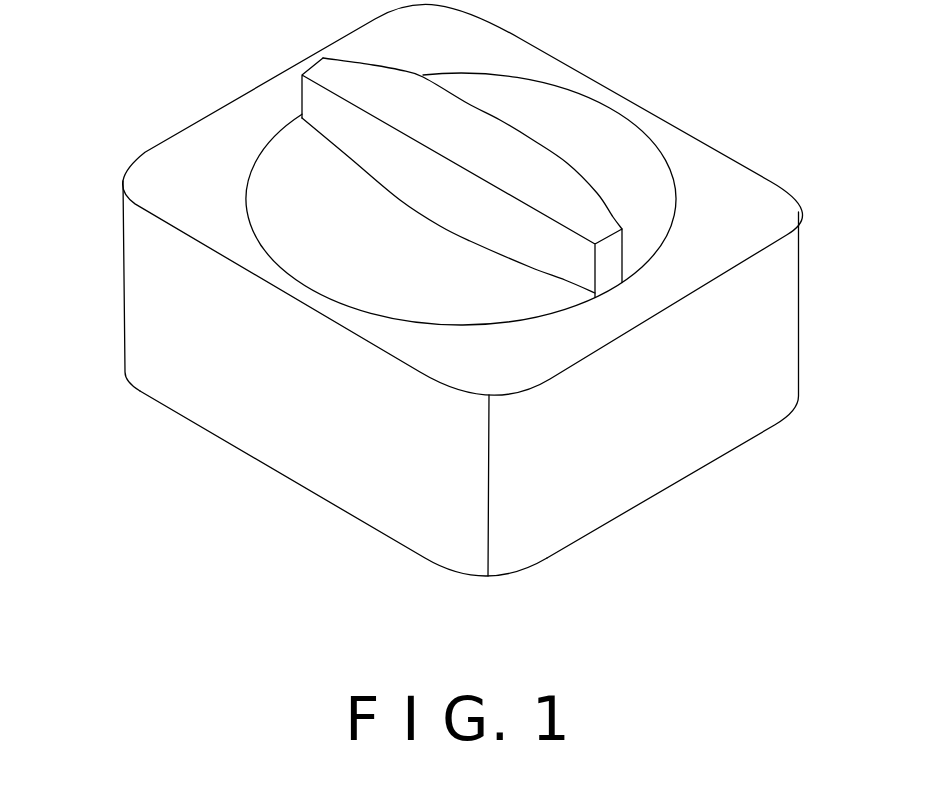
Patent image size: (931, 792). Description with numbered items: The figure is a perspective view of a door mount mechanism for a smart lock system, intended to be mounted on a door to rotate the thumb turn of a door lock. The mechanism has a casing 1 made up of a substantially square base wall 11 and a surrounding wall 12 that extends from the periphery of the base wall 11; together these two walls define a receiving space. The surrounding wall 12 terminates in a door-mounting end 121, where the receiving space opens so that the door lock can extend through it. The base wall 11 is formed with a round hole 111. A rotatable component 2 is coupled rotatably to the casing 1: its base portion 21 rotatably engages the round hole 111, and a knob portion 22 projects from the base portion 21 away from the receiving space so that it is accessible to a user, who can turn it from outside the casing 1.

The casing 1 is at (435, 315).
The base wall 11 is at (430, 315).
The round hole 111 is at (253, 167).
The surrounding wall 12 is at (335, 404).
The door-mounting end 121 is at (410, 522).
The rotatable component 2 is at (529, 316).
The base portion 21 is at (530, 302).
The knob portion 22 is at (590, 213).